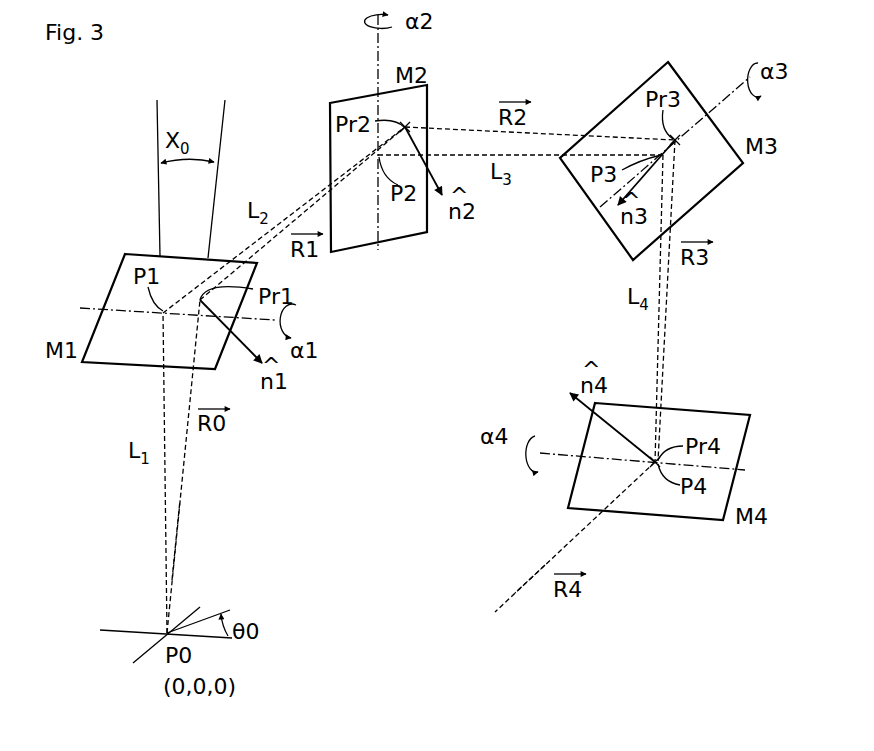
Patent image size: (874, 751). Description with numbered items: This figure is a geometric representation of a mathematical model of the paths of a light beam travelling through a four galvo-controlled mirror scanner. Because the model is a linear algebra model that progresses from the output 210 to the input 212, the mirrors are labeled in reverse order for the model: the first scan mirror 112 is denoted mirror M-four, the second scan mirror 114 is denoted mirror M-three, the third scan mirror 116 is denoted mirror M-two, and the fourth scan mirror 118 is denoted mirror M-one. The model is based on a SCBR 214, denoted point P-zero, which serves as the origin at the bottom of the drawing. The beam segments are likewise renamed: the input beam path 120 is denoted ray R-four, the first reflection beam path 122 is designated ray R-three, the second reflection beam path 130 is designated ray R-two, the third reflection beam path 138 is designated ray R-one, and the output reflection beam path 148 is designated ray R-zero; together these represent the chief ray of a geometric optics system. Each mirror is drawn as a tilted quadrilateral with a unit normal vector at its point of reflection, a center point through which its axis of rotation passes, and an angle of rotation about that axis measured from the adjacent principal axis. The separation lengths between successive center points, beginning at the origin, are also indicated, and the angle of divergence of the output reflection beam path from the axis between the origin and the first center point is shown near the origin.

The first scan mirror 112 is at (730, 413).
The second scan mirror 114 is at (728, 172).
The third scan mirror 116 is at (343, 103).
The fourth scan mirror 118 is at (122, 262).
The input beam path 120 is at (592, 524).
The first reflection beam path 122 is at (672, 318).
The second reflection beam path 130 is at (553, 133).
The third reflection beam path 138 is at (268, 246).
The output reflection beam path 148 is at (184, 467).
The output 210 is at (179, 538).
The input 212 is at (526, 581).
The SCBR 214 is at (160, 636).